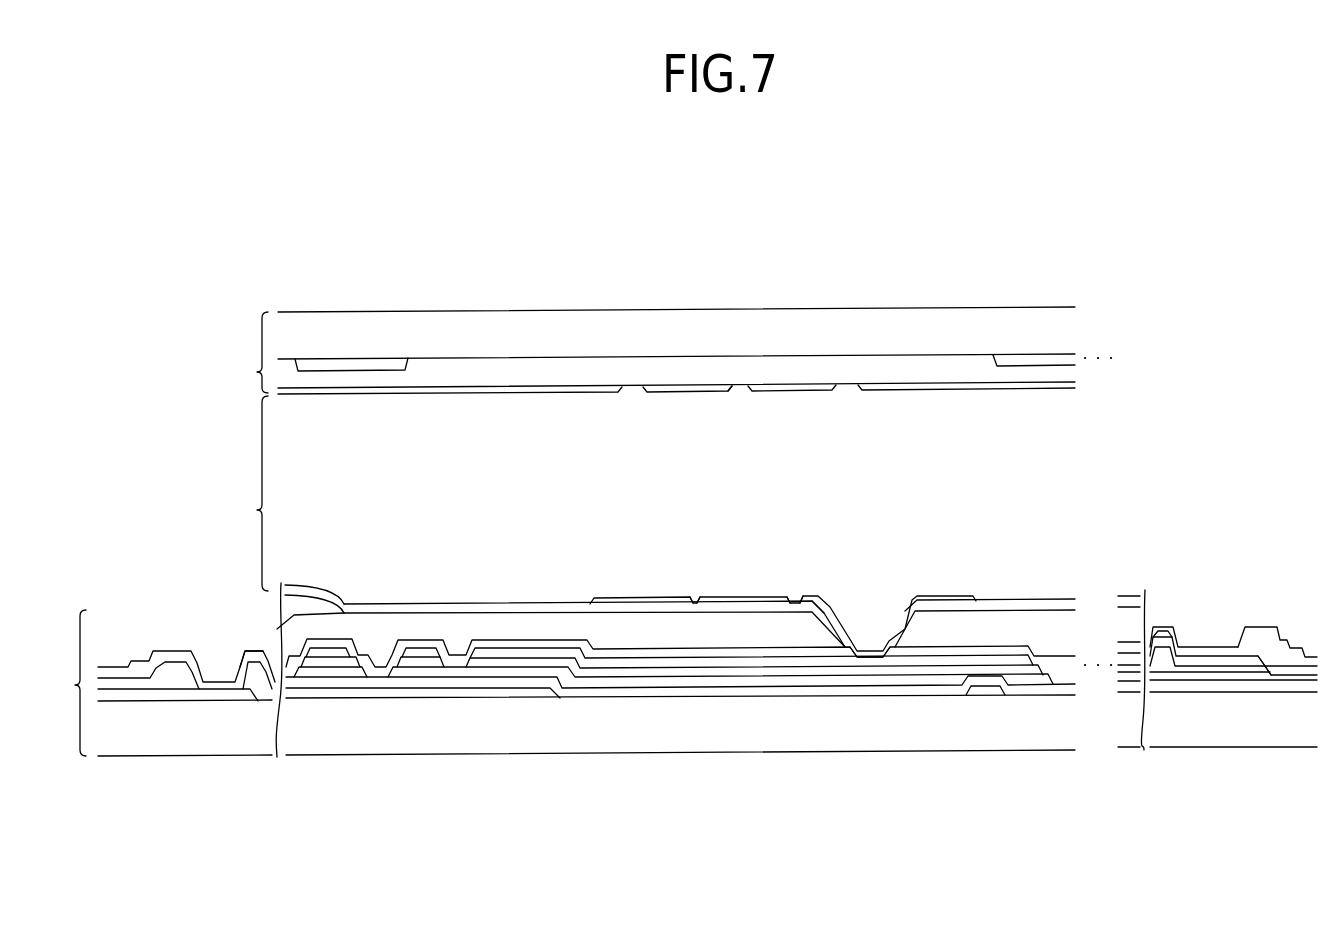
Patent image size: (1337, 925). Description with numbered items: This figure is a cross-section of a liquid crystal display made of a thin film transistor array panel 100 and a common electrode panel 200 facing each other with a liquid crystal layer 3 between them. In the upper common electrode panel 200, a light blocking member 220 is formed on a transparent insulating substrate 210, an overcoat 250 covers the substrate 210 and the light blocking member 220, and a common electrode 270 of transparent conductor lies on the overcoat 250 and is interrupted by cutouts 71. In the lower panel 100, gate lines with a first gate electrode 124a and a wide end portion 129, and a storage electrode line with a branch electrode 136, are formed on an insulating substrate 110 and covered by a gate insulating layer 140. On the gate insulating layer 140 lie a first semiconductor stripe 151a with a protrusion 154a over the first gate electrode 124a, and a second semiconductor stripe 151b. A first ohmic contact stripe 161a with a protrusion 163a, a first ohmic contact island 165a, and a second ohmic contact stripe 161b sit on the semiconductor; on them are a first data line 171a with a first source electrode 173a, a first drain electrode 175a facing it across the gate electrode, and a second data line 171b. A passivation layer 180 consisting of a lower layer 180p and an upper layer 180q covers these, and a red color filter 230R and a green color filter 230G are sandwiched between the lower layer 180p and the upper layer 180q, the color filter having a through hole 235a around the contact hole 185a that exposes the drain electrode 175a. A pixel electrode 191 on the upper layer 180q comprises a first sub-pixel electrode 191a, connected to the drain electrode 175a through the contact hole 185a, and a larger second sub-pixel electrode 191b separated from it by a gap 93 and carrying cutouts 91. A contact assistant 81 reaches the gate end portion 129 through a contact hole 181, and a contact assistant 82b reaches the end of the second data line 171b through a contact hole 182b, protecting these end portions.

The liquid crystal layer 3 is at (255, 493).
The cutout 71 is at (731, 398).
The contact assistant 81 is at (176, 650).
The contact assistant 82b is at (1280, 627).
The cutout 91 is at (680, 598).
The gap 93 is at (791, 598).
The thin film transistor array panel 100 is at (60, 683).
The insulating substrate 110 is at (257, 743).
The first gate electrode 124a is at (540, 693).
The end portion 129 is at (212, 695).
The branch electrode 136 is at (985, 692).
The gate insulating layer 140 is at (160, 695).
The first semiconductor stripe 151a is at (315, 672).
The second semiconductor stripe 151b is at (1037, 682).
The protrusion 154a is at (468, 672).
The first ohmic contact stripe 161a is at (330, 663).
The second ohmic contact stripe 161b is at (1068, 668).
The protrusion 163a is at (420, 662).
The first ohmic contact island 165a is at (513, 663).
The first data line 171a is at (327, 650).
The second data line 171b is at (1065, 660).
The first source electrode 173a is at (395, 652).
The first drain electrode 175a is at (612, 653).
The passivation layer 180 is at (715, 815).
The lower layer 180p is at (138, 685).
The upper layer 180q is at (113, 675).
The contact hole 181 is at (238, 656).
The contact hole 182b is at (1262, 632).
The contact hole 185a is at (866, 625).
The pixel electrode 191 is at (808, 499).
The first sub-pixel electrode 191a is at (808, 598).
The second sub-pixel electrode 191b is at (625, 598).
The common electrode panel 200 is at (241, 352).
The insulating substrate 210 is at (682, 330).
The light blocking member 220 is at (365, 355).
The red color filter 230R is at (305, 586).
The green color filter 230G is at (518, 628).
The through hole 235a is at (838, 598).
The overcoat 250 is at (497, 378).
The common electrode 270 is at (572, 385).